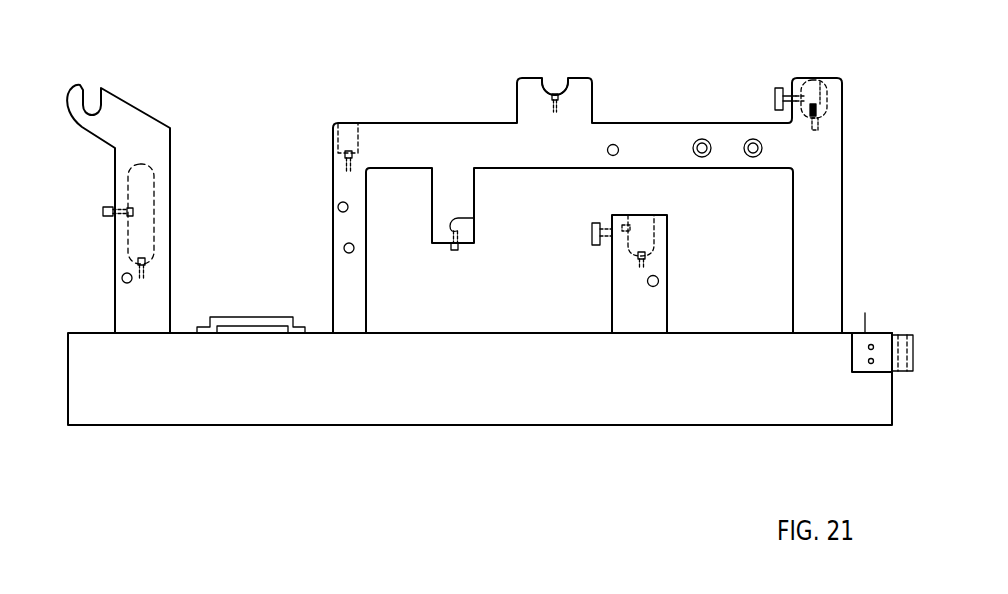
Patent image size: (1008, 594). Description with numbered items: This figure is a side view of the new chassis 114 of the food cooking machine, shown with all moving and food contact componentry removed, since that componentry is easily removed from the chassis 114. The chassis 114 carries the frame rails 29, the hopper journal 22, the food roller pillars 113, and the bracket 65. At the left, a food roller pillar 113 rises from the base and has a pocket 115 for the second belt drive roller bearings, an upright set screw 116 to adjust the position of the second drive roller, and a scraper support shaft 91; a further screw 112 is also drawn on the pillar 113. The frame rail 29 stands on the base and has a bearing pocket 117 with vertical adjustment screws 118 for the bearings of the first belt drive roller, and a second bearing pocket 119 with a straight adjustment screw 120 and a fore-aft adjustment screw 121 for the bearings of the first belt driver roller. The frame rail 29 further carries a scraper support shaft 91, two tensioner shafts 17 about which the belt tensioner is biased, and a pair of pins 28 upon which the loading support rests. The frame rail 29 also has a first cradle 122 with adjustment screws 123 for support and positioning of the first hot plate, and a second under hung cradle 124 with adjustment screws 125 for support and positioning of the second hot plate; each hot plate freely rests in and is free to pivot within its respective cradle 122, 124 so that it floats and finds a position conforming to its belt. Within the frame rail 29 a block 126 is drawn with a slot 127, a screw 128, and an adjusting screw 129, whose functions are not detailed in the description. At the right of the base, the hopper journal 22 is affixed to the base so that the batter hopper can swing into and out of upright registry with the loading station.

The chassis 114 is at (513, 446).
The food roller pillar 113 is at (126, 98).
The pocket 115 is at (150, 172).
The upright set screw 116 is at (148, 262).
The adjusting screw 112 is at (103, 211).
The scraper support shaft 91 is at (122, 278).
The tensioner shaft 17 is at (344, 248).
The bracket 65 is at (245, 316).
The frame rail 29 is at (421, 73).
The bearing pocket 117 is at (348, 128).
The vertical adjustment screw 118 is at (355, 128).
The first cradle 122 is at (545, 85).
The adjustment screw 123 is at (562, 88).
The second bearing pocket 119 is at (809, 84).
The straight adjustment screw 120 is at (815, 102).
The fore-aft adjustment screw 121 is at (775, 99).
The second under hung cradle 124 is at (475, 208).
The adjustment screw 125 is at (456, 251).
The stop block 126 is at (668, 304).
The slot 127 is at (630, 222).
The screw 128 is at (657, 238).
The adjusting screw 129 is at (592, 240).
The pin 28 is at (704, 157).
The hopper journal 22 is at (906, 334).